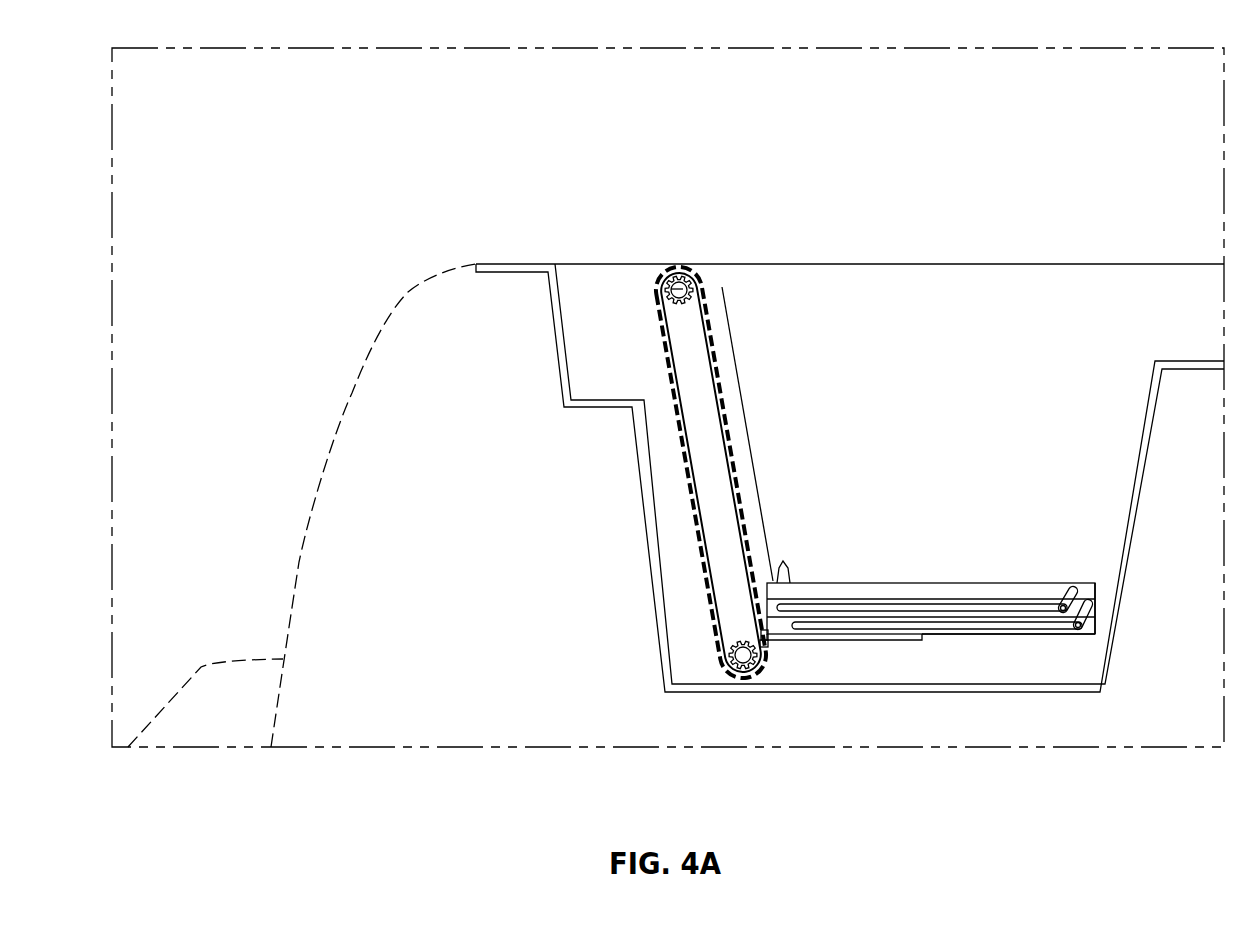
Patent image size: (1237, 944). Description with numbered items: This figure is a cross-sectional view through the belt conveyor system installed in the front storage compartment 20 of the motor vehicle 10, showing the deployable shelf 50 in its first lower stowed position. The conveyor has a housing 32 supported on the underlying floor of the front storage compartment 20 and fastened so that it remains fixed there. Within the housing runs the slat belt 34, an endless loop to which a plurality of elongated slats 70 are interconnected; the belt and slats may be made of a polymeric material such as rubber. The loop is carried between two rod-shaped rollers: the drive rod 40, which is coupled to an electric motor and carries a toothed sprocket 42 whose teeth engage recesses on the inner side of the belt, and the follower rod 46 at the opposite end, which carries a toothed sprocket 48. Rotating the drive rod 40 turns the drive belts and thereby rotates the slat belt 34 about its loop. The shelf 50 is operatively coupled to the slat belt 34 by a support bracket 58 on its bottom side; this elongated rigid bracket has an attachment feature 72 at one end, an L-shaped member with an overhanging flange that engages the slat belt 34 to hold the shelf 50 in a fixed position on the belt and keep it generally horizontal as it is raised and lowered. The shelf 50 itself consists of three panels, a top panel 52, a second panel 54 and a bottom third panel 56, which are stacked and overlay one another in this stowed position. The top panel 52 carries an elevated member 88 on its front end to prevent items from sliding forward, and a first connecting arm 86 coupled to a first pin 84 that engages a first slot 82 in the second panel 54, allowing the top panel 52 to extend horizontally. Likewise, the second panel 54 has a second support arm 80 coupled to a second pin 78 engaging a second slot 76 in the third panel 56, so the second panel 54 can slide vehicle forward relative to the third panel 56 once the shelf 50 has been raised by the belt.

The motor vehicle 10 is at (374, 331).
The front storage compartment 20 is at (975, 316).
The housing 32 is at (730, 325).
The slat belt 34 is at (737, 429).
The drive rod 40 is at (743, 655).
The toothed sprocket 42 is at (764, 646).
The follower rod 46 is at (672, 289).
The toothed sprocket 48 is at (698, 270).
The deployable shelf 50 is at (979, 626).
The top panel 52 is at (1086, 603).
The second panel 54 is at (1097, 605).
The third panel 56 is at (1095, 627).
The support bracket 58 is at (880, 640).
The elongated slat 70 is at (718, 372).
The attachment feature 72 is at (763, 632).
The second slot 76 is at (915, 625).
The second pin 78 is at (1078, 628).
The second support arm 80 is at (1083, 612).
The first slot 82 is at (858, 605).
The first pin 84 is at (1062, 606).
The first connecting arm 86 is at (1074, 590).
The elevated member 88 is at (784, 562).